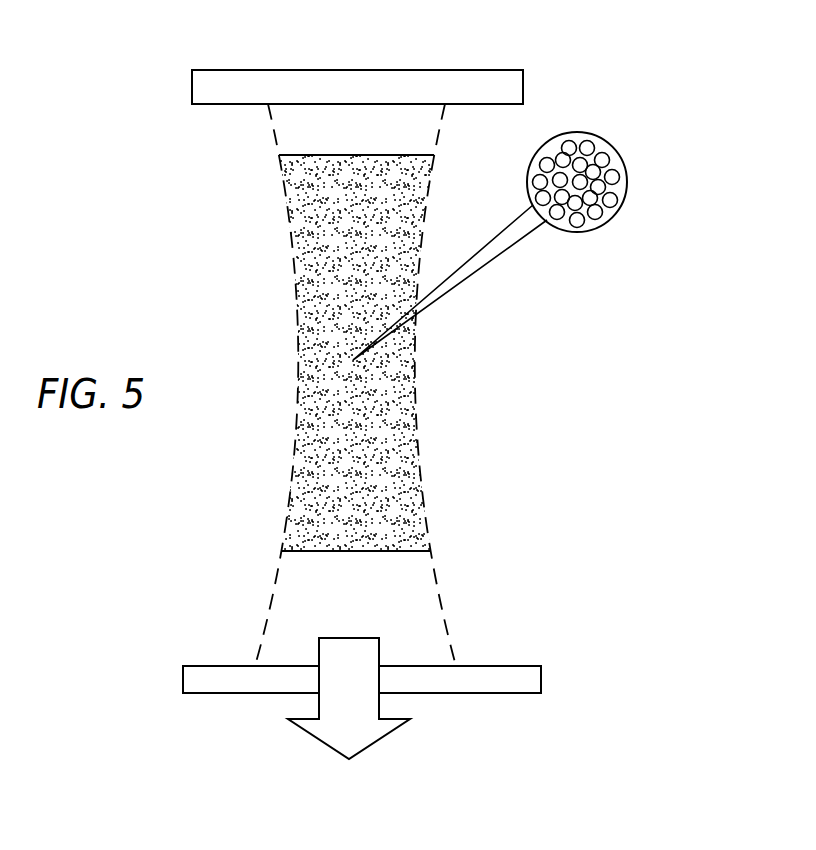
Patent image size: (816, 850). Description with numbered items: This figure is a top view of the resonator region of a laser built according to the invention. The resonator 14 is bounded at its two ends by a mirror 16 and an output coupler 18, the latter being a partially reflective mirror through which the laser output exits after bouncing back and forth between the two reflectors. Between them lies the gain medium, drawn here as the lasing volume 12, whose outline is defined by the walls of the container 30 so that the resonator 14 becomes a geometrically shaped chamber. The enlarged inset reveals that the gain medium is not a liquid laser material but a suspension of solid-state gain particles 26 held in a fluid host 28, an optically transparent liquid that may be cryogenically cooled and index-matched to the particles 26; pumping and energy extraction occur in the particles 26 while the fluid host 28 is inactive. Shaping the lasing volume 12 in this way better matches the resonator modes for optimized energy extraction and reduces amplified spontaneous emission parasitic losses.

The gain medium 12 is at (394, 432).
The resonator 14 is at (395, 387).
The mirror 16 is at (192, 87).
The output coupler 18 is at (520, 678).
The solid-state gain particles 26 is at (610, 200).
The fluid host 28 is at (602, 147).
The container 30 is at (445, 620).